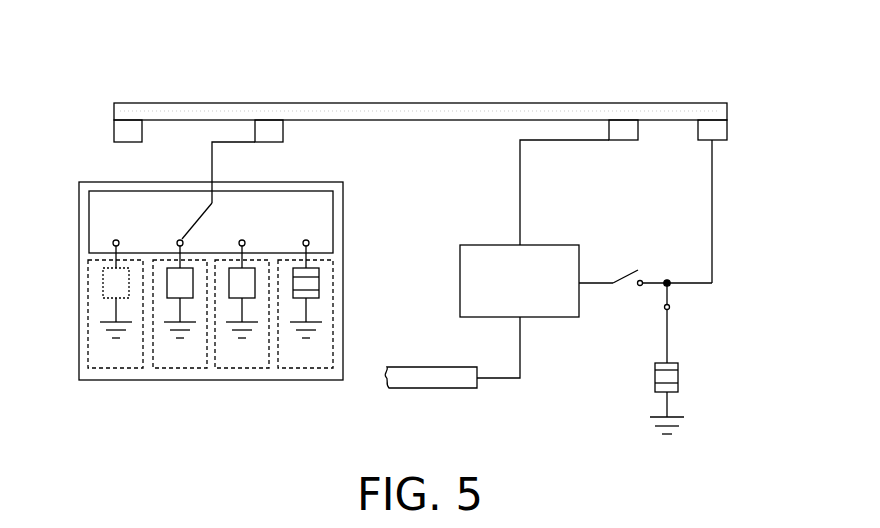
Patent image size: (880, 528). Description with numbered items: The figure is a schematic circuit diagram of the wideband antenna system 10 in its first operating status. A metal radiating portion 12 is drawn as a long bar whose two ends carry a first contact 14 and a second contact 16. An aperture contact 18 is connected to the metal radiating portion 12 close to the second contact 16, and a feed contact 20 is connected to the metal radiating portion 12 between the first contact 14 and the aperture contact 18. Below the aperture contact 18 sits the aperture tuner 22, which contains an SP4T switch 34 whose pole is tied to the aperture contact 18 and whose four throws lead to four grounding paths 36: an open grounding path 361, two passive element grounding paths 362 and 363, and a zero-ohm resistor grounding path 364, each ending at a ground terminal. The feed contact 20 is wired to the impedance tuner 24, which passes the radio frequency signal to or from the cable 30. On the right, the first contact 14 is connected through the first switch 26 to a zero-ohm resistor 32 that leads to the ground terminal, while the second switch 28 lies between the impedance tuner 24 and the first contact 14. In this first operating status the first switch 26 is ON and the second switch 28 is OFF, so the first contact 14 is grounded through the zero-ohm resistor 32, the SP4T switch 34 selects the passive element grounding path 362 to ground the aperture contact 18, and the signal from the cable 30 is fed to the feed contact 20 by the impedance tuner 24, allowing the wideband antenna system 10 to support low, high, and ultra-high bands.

The wideband antenna system 10 is at (80, 84).
The metal radiating portion 12 is at (317, 113).
The first contact 14 is at (712, 128).
The second contact 16 is at (128, 128).
The aperture contact 18 is at (269, 128).
The feed contact 20 is at (623, 130).
The aperture tuner 22 is at (343, 236).
The impedance tuner 24 is at (460, 283).
The first switch 26 is at (668, 326).
The second switch 28 is at (620, 285).
The cable 30 is at (413, 372).
The zero-ohm resistor 32 is at (678, 375).
The SP4T switch 34 is at (343, 204).
The grounding paths 36 is at (312, 422).
The open grounding path 361 is at (100, 380).
The passive element grounding path 362 is at (162, 380).
The passive element grounding path 363 is at (225, 380).
The zero-ohm resistor grounding path 364 is at (288, 380).